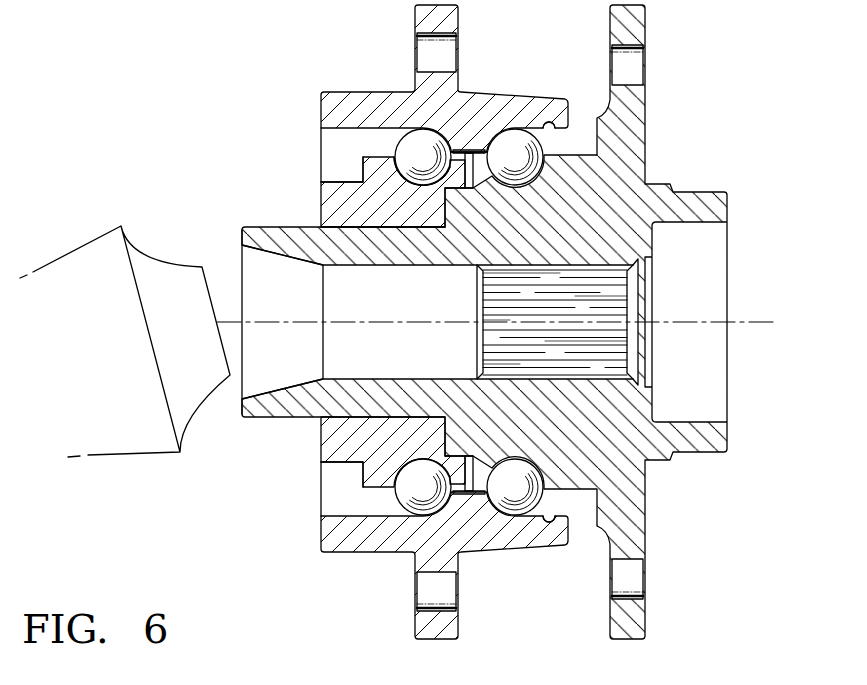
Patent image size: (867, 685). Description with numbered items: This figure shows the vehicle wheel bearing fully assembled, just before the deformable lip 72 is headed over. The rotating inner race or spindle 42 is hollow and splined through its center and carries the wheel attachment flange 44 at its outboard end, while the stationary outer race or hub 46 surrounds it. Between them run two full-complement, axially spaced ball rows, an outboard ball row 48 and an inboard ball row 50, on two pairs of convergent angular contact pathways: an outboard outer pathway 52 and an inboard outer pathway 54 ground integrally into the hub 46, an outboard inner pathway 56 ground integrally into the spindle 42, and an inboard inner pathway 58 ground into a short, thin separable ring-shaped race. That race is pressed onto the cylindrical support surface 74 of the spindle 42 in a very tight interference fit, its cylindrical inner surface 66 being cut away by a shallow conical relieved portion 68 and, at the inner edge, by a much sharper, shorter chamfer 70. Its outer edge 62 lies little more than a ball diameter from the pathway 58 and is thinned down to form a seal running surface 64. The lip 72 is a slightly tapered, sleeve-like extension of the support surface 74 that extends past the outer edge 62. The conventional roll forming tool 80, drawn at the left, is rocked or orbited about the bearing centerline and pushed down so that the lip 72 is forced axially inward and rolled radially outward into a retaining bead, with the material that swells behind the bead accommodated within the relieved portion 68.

The spindle 42 is at (700, 193).
The wheel attachment flange 44 is at (637, 110).
The hub 46 is at (470, 95).
The outboard ball row 48 is at (503, 140).
The inboard ball row 50 is at (403, 150).
The outboard outer pathway 52 is at (555, 131).
The inboard outer pathway 54 is at (412, 132).
The outboard inner pathway 56 is at (495, 464).
The inboard inner pathway 58 is at (410, 497).
The outer edge 62 is at (321, 203).
The seal running surface 64 is at (362, 182).
The inner surface 66 is at (350, 403).
The conical relieved portion 68 is at (320, 221).
The chamfer 70 is at (447, 422).
The deformable lip 72 is at (253, 229).
The cylindrical support surface 74 is at (372, 452).
The roll forming tool 80 is at (94, 245).